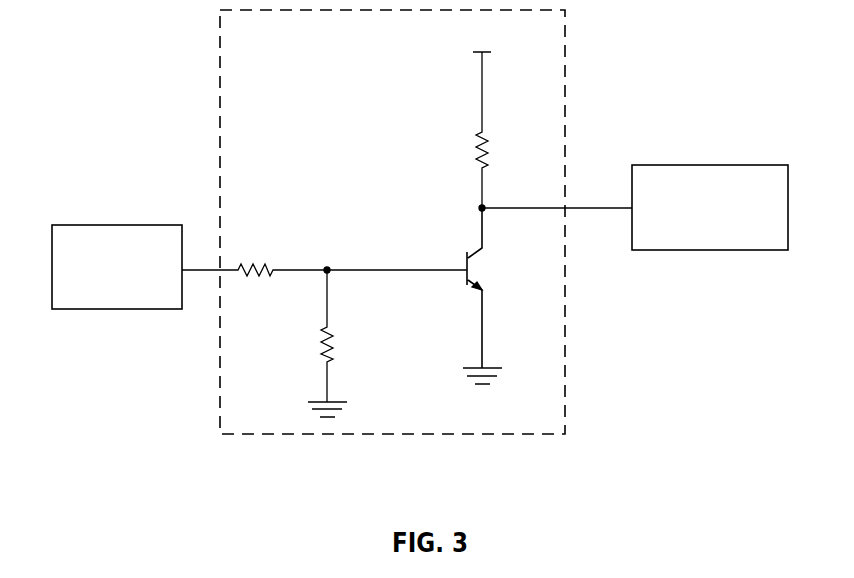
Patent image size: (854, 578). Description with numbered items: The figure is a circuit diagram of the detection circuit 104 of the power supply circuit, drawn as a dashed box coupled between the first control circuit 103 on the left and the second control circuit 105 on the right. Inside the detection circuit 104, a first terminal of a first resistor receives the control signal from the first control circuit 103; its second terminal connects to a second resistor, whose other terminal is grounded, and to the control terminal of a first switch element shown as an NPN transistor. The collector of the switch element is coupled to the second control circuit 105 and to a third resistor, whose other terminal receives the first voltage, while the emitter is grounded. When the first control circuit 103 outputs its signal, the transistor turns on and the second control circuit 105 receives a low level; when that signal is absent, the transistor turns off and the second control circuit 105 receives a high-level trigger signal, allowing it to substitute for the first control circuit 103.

The first control circuit 103 is at (107, 309).
The detection circuit 104 is at (405, 434).
The second control circuit 105 is at (727, 250).